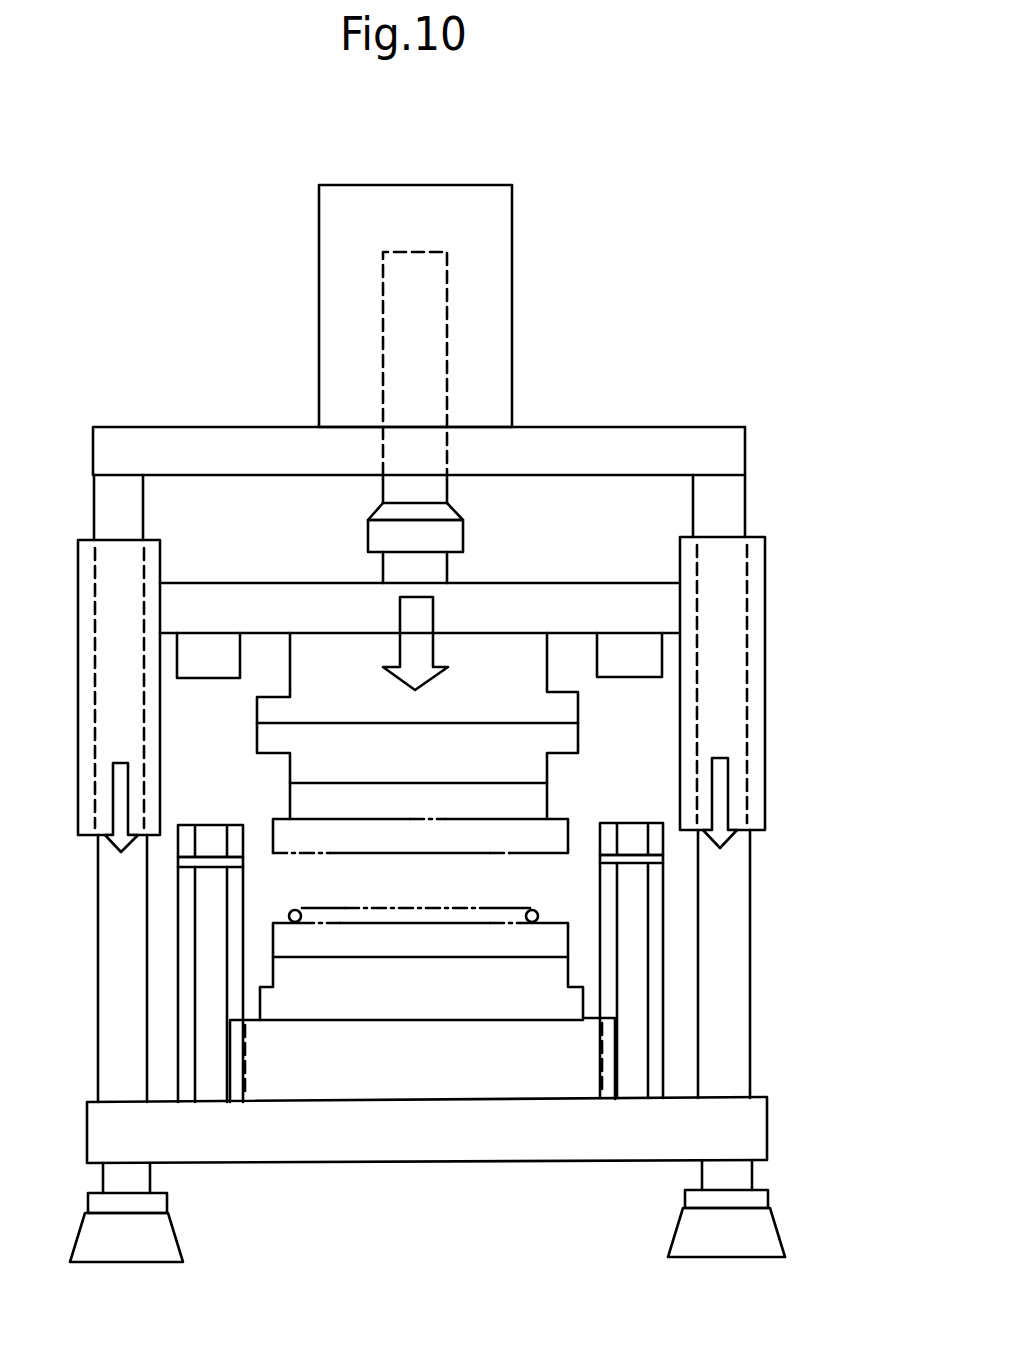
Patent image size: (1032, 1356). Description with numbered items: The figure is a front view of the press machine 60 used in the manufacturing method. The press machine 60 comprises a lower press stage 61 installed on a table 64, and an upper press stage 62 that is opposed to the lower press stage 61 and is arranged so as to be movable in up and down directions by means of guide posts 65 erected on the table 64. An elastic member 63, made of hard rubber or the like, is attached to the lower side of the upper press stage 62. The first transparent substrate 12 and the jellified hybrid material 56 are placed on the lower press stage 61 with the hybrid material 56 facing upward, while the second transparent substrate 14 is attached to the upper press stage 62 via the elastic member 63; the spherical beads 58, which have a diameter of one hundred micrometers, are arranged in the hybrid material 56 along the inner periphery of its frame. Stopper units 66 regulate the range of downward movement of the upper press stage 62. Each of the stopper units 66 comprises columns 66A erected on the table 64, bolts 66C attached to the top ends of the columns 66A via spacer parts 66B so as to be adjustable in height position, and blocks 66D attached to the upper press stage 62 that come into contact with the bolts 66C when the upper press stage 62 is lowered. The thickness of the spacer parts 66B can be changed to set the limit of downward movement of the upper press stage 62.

The press machine 60 is at (138, 340).
The guide posts 65 is at (728, 503).
The stopper units 66 is at (488, 819).
The columns 66A is at (504, 982).
The spacer parts 66B is at (657, 858).
The bolts 66C is at (655, 838).
The blocks 66D is at (643, 655).
The upper press stage 62 is at (525, 765).
The elastic member 63 is at (525, 795).
The second transparent substrate 14 is at (273, 822).
The first transparent substrate 12 is at (290, 942).
The hybrid material 56 is at (393, 906).
The spherical beads 58 is at (534, 909).
The lower press stage 61 is at (543, 978).
The table 64 is at (443, 1165).